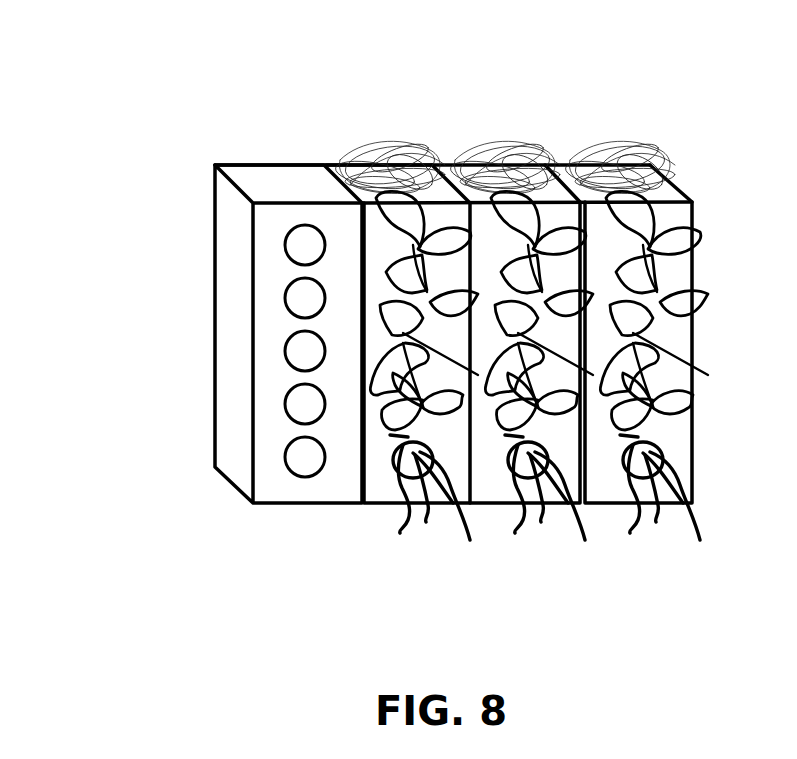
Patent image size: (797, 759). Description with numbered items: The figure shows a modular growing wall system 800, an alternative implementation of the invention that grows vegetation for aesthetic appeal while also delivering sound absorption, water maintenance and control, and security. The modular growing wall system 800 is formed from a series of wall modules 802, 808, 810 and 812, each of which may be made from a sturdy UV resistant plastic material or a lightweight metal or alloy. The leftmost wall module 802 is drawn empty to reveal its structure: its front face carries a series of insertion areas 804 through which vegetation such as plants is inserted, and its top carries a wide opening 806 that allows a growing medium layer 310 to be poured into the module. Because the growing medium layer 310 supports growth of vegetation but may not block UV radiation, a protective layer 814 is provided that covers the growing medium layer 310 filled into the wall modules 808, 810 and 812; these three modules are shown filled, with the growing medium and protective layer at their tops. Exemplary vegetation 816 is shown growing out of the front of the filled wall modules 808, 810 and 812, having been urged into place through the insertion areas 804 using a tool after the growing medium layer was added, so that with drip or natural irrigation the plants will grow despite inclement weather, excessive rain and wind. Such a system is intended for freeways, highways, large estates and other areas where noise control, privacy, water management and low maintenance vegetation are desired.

The modular growing wall system 800 is at (170, 70).
The wall module 802 is at (253, 503).
The insertion areas 804 is at (305, 247).
The opening 806 is at (280, 185).
The wall module 808 is at (380, 504).
The wall module 810 is at (500, 504).
The wall module 812 is at (613, 504).
The protective layer 814 is at (398, 190).
The vegetation 816 is at (403, 316).
The growing medium layer 310 is at (422, 203).